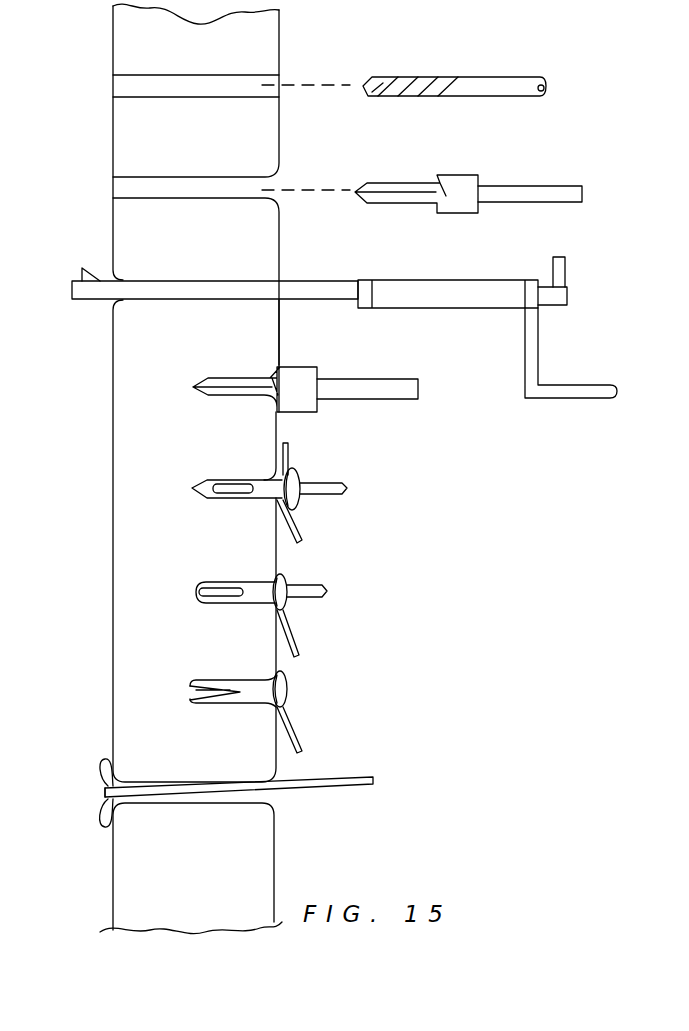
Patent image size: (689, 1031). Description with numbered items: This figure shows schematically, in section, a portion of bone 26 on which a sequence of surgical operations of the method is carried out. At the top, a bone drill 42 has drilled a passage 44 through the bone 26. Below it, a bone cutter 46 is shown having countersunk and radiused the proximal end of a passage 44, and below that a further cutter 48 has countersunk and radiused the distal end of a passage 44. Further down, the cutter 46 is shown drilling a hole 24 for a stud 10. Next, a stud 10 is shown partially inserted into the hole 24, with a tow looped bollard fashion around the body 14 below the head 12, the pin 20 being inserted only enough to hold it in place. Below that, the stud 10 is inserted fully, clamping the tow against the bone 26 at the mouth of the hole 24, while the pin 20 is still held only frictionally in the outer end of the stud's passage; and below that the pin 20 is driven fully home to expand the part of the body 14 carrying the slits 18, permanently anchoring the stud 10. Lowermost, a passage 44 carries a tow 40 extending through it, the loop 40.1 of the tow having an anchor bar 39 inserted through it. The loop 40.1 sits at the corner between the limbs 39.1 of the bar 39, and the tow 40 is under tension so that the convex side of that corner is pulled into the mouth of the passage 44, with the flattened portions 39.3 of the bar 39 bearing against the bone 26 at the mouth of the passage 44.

The stud 10 is at (255, 621).
The head 12 is at (301, 478).
The elongated cylindrical tubular body 14 is at (245, 480).
The slits 18 is at (227, 497).
The pin 20 is at (348, 490).
The hole 24 is at (228, 373).
The bone 26 is at (265, 332).
The anchor bar 39 is at (67, 790).
The limbs 39.1 is at (100, 810).
The flattened portions 39.3 is at (103, 763).
The tow 40 is at (298, 528).
The loop 40.1 is at (100, 795).
The bone drill 42 is at (489, 82).
The passage 44 is at (252, 71).
The bone cutter 46 is at (402, 188).
The further cutter 48 is at (393, 269).